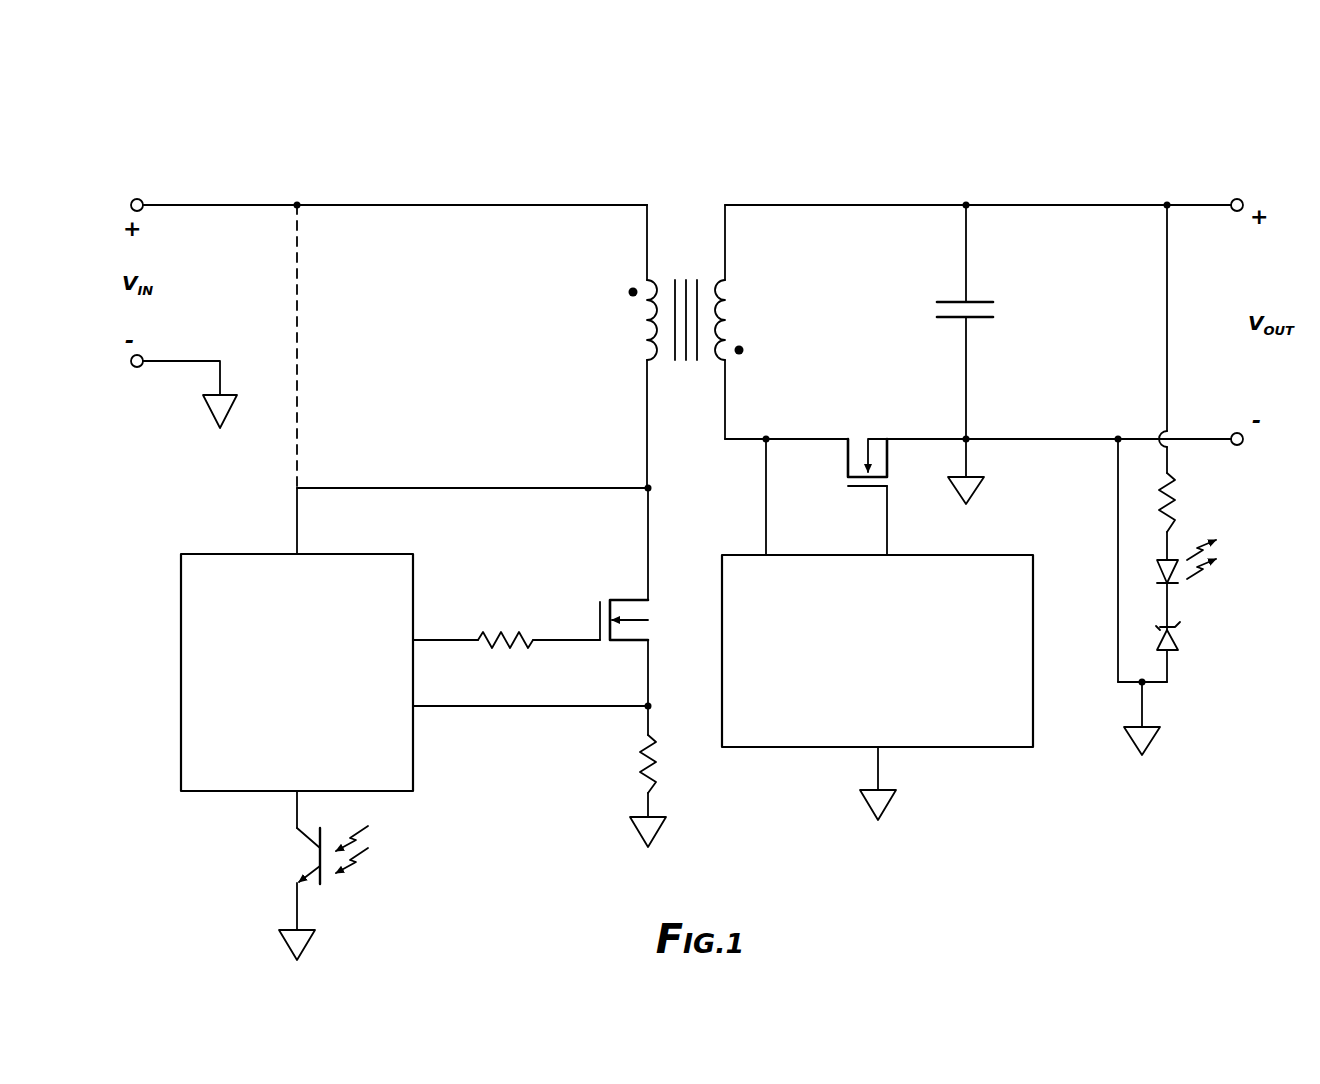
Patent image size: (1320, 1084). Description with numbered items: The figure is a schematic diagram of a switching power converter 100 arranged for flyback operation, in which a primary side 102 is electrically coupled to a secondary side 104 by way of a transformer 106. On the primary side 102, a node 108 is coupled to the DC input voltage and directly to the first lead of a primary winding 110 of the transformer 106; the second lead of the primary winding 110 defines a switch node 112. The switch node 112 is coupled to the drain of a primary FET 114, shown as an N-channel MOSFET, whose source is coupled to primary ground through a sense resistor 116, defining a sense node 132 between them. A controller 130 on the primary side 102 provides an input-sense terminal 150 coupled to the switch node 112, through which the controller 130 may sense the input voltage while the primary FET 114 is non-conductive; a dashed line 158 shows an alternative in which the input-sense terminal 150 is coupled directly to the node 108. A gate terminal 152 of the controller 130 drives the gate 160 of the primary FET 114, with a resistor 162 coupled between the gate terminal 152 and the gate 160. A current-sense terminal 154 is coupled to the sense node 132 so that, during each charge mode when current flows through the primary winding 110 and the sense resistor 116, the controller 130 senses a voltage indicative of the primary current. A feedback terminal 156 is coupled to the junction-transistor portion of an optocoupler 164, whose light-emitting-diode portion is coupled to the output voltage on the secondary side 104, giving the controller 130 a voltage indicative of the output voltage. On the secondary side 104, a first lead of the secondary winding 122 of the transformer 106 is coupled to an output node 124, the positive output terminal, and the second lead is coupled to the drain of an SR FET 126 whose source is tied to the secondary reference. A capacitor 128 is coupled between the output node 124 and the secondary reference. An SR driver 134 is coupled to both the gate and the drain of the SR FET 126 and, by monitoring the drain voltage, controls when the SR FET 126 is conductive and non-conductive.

The switching power converter 100 is at (183, 103).
The primary side 102 is at (537, 168).
The secondary side 104 is at (988, 190).
The transformer 106 is at (688, 250).
The node 108 is at (297, 205).
The primary winding 110 is at (602, 300).
The switch node 112 is at (648, 488).
The primary FET 114 is at (615, 585).
The sense resistor 116 is at (640, 778).
The secondary winding 122 is at (745, 312).
The output node 124 is at (966, 205).
The SR FET 126 is at (900, 462).
The capacitor 128 is at (980, 320).
The controller 130 is at (218, 791).
The sense node 132 is at (648, 706).
The SR driver 134 is at (858, 681).
The input-sense terminal 150 is at (295, 554).
The gate terminal 152 is at (413, 640).
The current-sense terminal 154 is at (413, 708).
The feedback terminal 156 is at (293, 795).
The dashed line 158 is at (297, 378).
The gate 160 is at (598, 635).
The resistor 162 is at (500, 650).
The optocoupler 164 is at (300, 862).